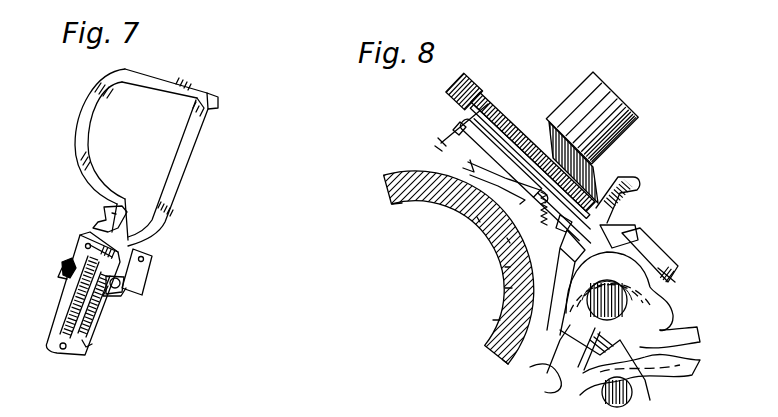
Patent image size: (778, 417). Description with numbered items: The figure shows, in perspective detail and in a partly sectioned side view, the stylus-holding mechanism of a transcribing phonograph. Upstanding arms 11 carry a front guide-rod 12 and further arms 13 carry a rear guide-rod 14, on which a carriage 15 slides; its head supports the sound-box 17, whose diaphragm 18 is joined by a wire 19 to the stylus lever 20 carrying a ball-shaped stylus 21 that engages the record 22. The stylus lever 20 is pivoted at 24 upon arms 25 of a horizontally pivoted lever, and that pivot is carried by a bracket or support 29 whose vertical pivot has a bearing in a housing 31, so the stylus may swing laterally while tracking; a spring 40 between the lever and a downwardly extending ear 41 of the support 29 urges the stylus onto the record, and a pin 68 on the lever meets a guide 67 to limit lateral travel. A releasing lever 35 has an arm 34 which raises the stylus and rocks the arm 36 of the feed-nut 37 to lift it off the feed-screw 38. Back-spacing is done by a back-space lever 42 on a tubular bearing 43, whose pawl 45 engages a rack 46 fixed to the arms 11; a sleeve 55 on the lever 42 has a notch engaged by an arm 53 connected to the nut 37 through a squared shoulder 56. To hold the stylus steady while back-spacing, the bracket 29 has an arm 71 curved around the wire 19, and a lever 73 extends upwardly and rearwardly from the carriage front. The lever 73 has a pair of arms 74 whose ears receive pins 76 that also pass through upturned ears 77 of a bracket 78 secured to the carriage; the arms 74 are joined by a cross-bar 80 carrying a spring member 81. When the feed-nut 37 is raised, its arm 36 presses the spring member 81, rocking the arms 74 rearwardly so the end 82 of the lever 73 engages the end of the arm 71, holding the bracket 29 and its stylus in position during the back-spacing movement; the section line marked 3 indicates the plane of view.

In FIG. 8, the section line 3 is at (440, 68).
In FIG. 7, the upstanding arms 11 is at (84, 124).
In FIG. 7, the front guide-rod 12 is at (217, 96).
In FIG. 8, the front guide-rod 12 is at (625, 317).
In FIG. 7, the arms 13 is at (177, 170).
In FIG. 7, the rear guide-rod 14 is at (60, 292).
In FIG. 7, the carriage 15 is at (74, 254).
In FIG. 8, the sound-box 17 is at (578, 92).
In FIG. 8, the diaphragm 18 is at (596, 163).
In FIG. 8, the wire 19 is at (517, 132).
In FIG. 8, the stylus lever 20 is at (540, 205).
In FIG. 8, the ball-shaped stylus 21 is at (463, 212).
In FIG. 8, the record 22 is at (392, 177).
In FIG. 8, the pivot 24 is at (477, 217).
In FIG. 8, the arms 25 is at (470, 165).
In FIG. 7, the bracket or support 29 is at (104, 208).
In FIG. 8, the bracket or support 29 is at (560, 222).
In FIG. 8, the housing 31 is at (632, 178).
In FIG. 8, the arm or projection 34 is at (630, 225).
In FIG. 8, the releasing lever 35 is at (693, 325).
In FIG. 8, the arm 36 is at (507, 360).
In FIG. 8, the feed-nut 37 is at (610, 360).
In FIG. 8, the feed-screw 38 is at (602, 393).
In FIG. 8, the spring 40 is at (507, 238).
In FIG. 8, the downwardly extending ear 41 is at (505, 267).
In FIG. 8, the back-space lever 42 is at (692, 357).
In FIG. 8, the tubular bearing 43 is at (630, 295).
In FIG. 8, the pawl 45 is at (657, 253).
In FIG. 8, the rack 46 is at (673, 272).
In FIG. 8, the arm 53 is at (547, 373).
In FIG. 8, the sleeve 55 is at (578, 367).
In FIG. 8, the squared shoulder 56 is at (530, 367).
In FIG. 8, the guide 67 is at (440, 140).
In FIG. 8, the pin 68 is at (448, 127).
In FIG. 8, the arm 71 is at (506, 128).
In FIG. 8, the lever 73 is at (462, 112).
In FIG. 8, the arms 74 is at (493, 320).
In FIG. 7, the pins 76 is at (66, 263).
In FIG. 8, the pins 76 is at (568, 252).
In FIG. 7, the upturned ears 77 is at (60, 273).
In FIG. 7, the bracket 78 is at (146, 273).
In FIG. 7, the cross-bar 80 is at (63, 349).
In FIG. 7, the spring member 81 is at (89, 330).
In FIG. 8, the spring member 81 is at (505, 288).
In FIG. 7, the end 82 is at (205, 100).